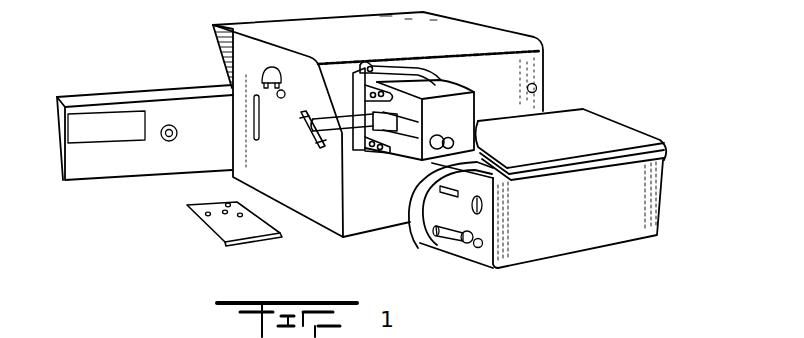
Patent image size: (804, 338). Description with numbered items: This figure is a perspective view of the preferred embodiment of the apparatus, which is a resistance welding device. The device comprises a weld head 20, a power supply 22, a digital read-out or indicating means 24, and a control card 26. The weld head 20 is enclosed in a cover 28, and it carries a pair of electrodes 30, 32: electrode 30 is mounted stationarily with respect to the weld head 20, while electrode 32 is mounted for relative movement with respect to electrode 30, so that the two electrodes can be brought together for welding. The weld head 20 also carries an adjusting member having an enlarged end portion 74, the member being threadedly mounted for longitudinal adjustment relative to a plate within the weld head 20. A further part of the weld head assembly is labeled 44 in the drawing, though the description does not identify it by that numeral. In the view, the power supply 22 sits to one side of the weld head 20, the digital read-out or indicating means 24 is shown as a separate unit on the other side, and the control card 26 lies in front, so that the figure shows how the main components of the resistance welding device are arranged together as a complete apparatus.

The weld head 20 is at (457, 81).
The power supply 22 is at (628, 197).
The digital read-out or indicating means 24 is at (130, 168).
The control card 26 is at (202, 221).
The cover 28 is at (462, 100).
The electrode 30 is at (306, 136).
The electrode 32 is at (313, 142).
The lever arm bracket 44 is at (412, 70).
The enlarged end portion 74 is at (454, 143).